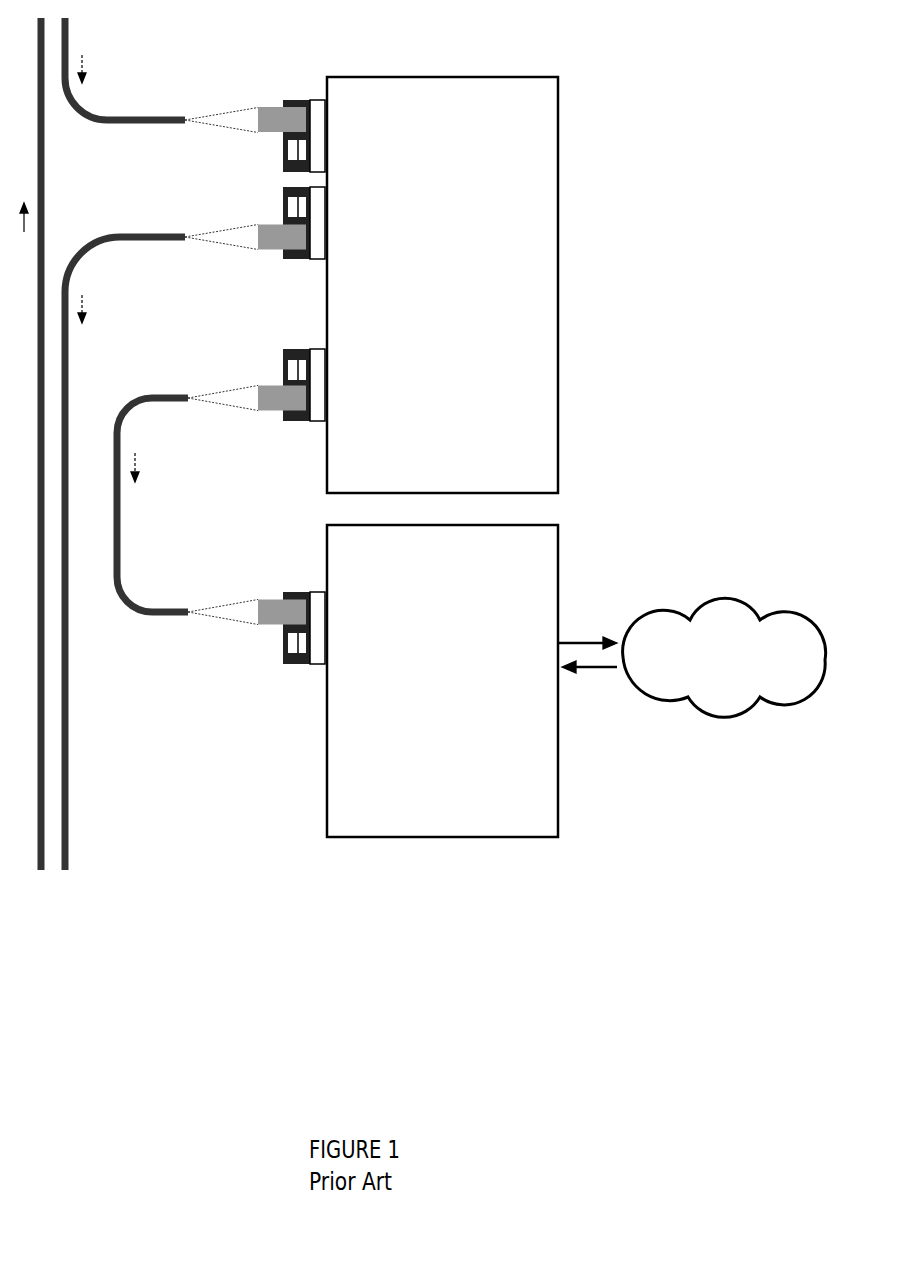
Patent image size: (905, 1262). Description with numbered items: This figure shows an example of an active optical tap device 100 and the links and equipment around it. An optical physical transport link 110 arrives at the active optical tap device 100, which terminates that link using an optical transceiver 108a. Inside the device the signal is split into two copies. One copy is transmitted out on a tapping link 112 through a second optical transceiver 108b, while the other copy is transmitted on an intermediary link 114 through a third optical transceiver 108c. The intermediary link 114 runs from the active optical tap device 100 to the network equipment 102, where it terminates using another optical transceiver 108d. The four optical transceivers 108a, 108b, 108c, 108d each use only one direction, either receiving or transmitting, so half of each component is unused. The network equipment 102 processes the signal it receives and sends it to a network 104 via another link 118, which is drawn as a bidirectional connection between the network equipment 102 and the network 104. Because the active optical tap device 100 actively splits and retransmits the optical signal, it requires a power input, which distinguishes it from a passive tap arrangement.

The active optical tap device 100 is at (559, 283).
The network equipment 102 is at (558, 797).
The network 104 is at (740, 705).
The optical transceiver 108a is at (307, 100).
The optical transceiver 108b is at (305, 260).
The third optical transceiver 108c is at (300, 422).
The optical transceiver 108d is at (298, 663).
The optical physical transport link 110 is at (154, 117).
The tapping link 112 is at (170, 233).
The intermediary link 114 is at (170, 396).
The link 118 is at (600, 640).